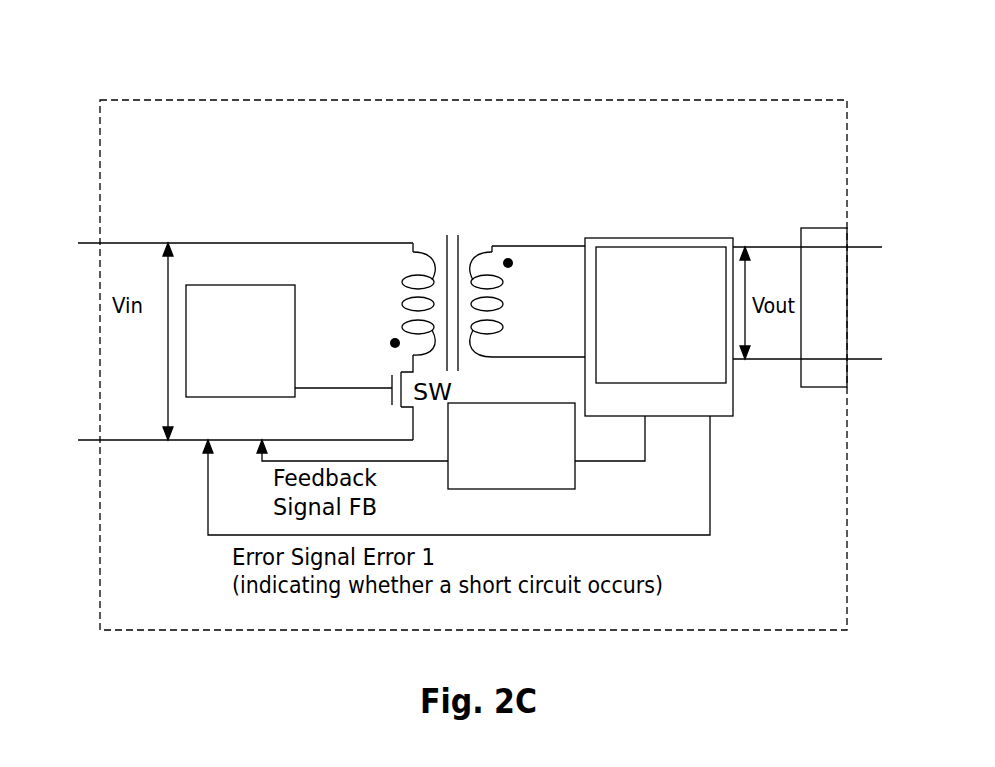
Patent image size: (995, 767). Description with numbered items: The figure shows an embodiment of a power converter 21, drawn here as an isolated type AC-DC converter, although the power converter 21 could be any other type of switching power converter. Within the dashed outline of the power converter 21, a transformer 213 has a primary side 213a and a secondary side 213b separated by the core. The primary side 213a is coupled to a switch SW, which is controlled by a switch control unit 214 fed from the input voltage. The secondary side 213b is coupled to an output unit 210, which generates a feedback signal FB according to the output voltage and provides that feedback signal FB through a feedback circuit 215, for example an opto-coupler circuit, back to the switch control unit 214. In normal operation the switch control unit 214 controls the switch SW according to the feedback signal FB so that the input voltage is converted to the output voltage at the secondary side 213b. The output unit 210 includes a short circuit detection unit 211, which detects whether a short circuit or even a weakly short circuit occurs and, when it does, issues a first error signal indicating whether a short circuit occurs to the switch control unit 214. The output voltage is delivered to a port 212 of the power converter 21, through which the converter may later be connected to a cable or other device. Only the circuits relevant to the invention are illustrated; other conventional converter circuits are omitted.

The power converter 21 is at (562, 100).
The output unit 210 is at (653, 232).
The short circuit detection unit 211 is at (644, 373).
The port 212 is at (822, 242).
The transformer 213 is at (452, 230).
The primary side 213a is at (380, 280).
The secondary side 213b is at (533, 282).
The switch control unit 214 is at (257, 385).
The feedback circuit 215 is at (528, 481).